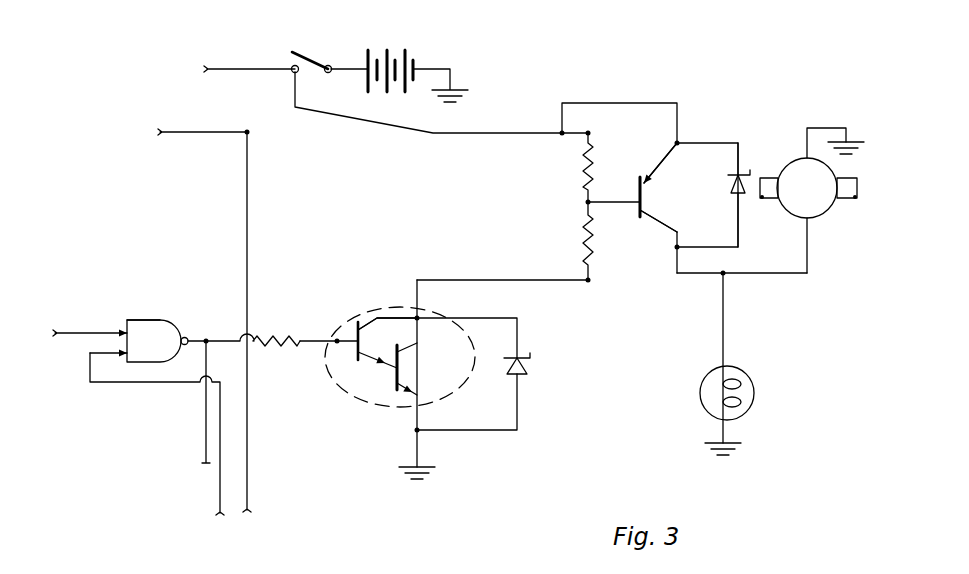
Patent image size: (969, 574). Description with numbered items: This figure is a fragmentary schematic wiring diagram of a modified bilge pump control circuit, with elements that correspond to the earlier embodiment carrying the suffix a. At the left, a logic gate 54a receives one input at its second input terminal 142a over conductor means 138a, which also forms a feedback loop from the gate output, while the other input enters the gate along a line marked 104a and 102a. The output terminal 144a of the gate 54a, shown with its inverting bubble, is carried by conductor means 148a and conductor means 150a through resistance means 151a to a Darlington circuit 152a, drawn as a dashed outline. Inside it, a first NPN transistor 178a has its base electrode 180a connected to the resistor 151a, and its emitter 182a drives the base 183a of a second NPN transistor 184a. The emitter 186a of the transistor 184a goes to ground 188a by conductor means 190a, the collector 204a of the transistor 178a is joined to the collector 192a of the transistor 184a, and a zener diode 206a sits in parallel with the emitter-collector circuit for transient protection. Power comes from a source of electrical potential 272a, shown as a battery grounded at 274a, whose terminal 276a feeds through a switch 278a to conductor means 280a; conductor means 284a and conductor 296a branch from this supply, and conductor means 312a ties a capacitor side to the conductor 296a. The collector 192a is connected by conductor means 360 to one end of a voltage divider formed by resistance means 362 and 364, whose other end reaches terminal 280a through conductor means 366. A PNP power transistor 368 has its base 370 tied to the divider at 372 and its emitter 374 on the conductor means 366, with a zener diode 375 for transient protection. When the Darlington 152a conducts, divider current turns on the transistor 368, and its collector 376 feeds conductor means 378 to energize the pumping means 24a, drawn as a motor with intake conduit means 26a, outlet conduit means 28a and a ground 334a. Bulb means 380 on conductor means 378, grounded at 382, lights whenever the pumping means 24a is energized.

The pumping means 24a is at (825, 222).
The intake conduit means 26a is at (847, 199).
The outlet conduit means 28a is at (770, 178).
The ground 334a is at (857, 150).
The gate 54a is at (143, 312).
The gate input 102a is at (126, 318).
The input line 104a is at (88, 332).
The second input terminal 142a is at (112, 352).
The conductor means 138a is at (115, 384).
The output terminal 144a is at (185, 336).
The conductor means 148a is at (203, 410).
The conductor means 150a is at (220, 338).
The resistance means 151a is at (291, 338).
The Darlington circuit 152a is at (436, 310).
The first NPN transistor 178a is at (350, 310).
The base electrode 180a is at (336, 353).
The emitter 182a is at (372, 362).
The base 183a is at (390, 372).
The second NPN transistor 184a is at (405, 371).
The emitter 186a is at (410, 387).
The ground 188a is at (420, 478).
The conductor means 190a is at (420, 440).
The collector 192a is at (410, 345).
The collector 204a is at (369, 318).
The zener diode 206a is at (532, 360).
The source of electrical potential 272a is at (410, 50).
The ground 274a is at (458, 102).
The battery terminal 276a is at (340, 66).
The switch 278a is at (306, 54).
The conductor means 280a is at (290, 73).
The conductor means 284a is at (247, 66).
The conductor 296a is at (175, 130).
The conductor means 312a is at (246, 180).
The conductor means 360 is at (455, 280).
The resistance means 362 is at (585, 154).
The resistance means 364 is at (585, 228).
The conductor means 366 is at (432, 136).
The PNP power transistor 368 is at (636, 222).
The base 370 is at (608, 200).
The voltage divider connection point 372 is at (587, 201).
The emitter 374 is at (656, 183).
The zener diode 375 is at (744, 195).
The collector 376 is at (668, 226).
The conductor means 378 is at (698, 276).
The bulb means 380 is at (757, 388).
The ground 382 is at (740, 456).